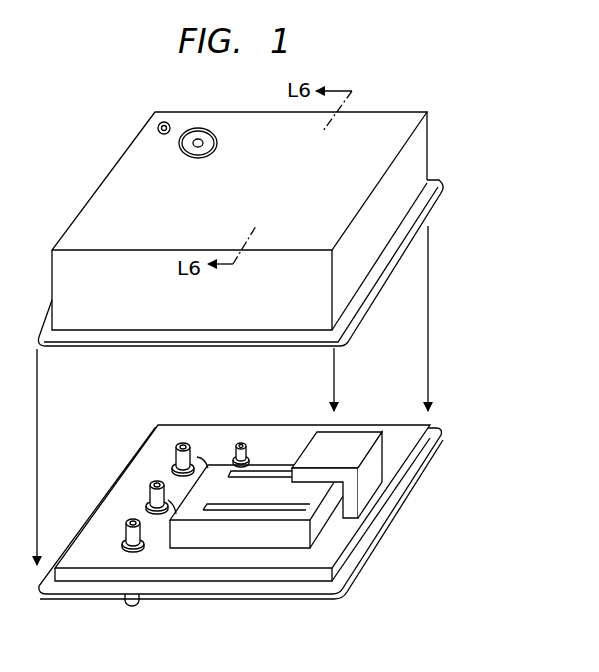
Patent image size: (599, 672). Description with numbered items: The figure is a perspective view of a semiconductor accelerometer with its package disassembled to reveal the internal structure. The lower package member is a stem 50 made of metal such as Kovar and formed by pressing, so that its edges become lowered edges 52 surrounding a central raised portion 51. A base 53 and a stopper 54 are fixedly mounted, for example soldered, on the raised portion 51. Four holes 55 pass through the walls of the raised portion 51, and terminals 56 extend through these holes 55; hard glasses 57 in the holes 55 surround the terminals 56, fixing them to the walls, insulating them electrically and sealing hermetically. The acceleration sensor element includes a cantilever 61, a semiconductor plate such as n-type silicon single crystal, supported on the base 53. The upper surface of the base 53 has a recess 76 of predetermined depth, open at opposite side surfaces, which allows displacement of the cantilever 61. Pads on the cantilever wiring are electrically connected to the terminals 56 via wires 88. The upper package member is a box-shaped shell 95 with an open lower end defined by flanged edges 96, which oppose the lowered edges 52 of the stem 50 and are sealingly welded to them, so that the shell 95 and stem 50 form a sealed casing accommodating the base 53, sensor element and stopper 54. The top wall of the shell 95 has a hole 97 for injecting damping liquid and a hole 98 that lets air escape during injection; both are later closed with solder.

The stem 50 is at (333, 605).
The raised portion 51 is at (368, 573).
The lowered edges 52 is at (440, 430).
The base 53 is at (253, 537).
The stopper 54 is at (352, 448).
The holes 55 is at (172, 470).
The terminals 56 is at (183, 441).
The hard glasses 57 is at (176, 462).
The cantilever 61 is at (280, 487).
The recess 76 is at (373, 548).
The wires 88 is at (199, 460).
The shell 95 is at (404, 203).
The flanged edges 96 is at (436, 184).
The hole 97 is at (199, 128).
The hole 98 is at (158, 127).